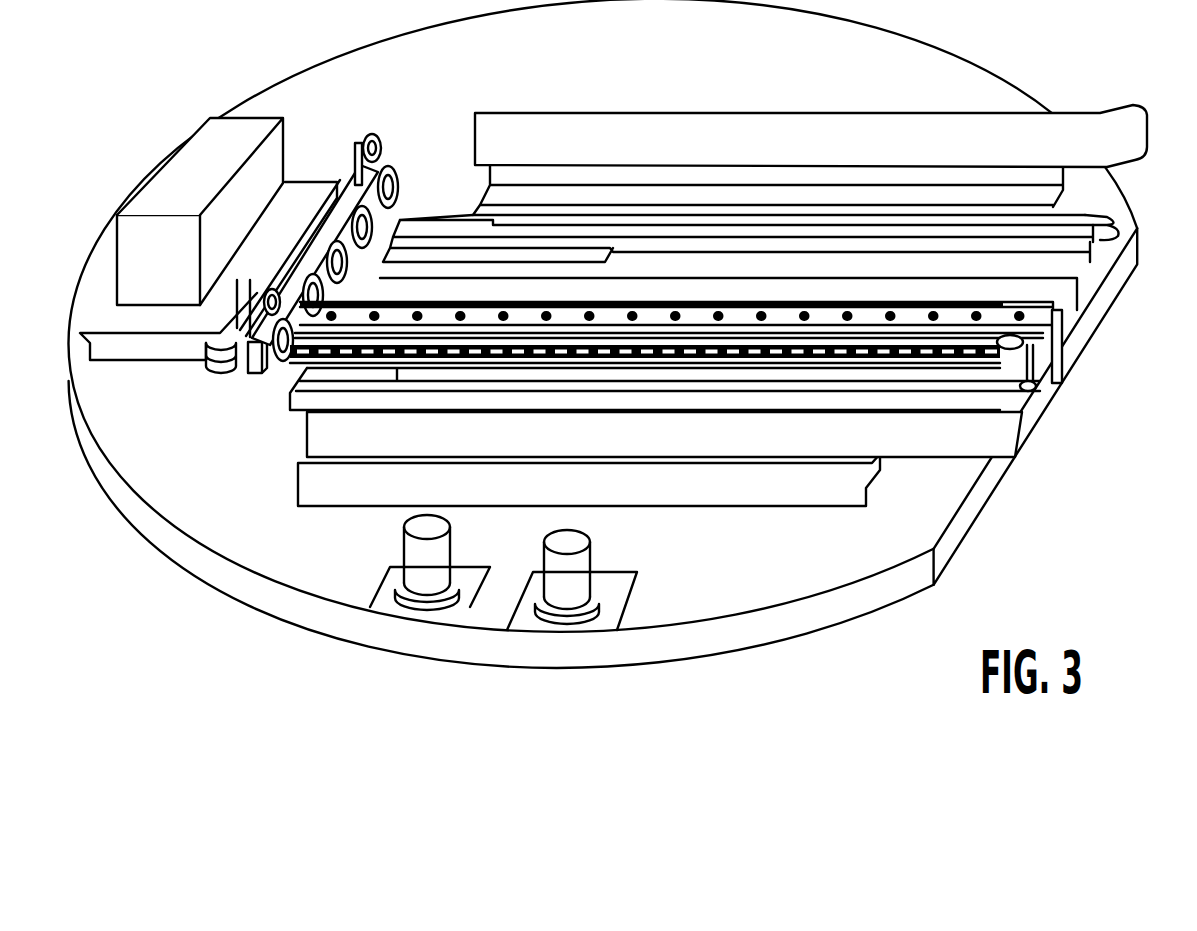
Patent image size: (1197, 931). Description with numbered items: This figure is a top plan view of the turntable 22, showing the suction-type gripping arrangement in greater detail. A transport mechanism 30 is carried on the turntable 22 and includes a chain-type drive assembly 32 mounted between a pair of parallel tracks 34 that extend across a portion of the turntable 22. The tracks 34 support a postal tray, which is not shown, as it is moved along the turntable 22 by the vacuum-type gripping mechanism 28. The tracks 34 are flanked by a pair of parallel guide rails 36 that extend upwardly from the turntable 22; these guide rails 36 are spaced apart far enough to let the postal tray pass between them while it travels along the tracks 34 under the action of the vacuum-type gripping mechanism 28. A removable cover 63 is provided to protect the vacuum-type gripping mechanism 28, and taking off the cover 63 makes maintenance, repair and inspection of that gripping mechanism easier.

The turntable 22 is at (762, 593).
The vacuum-type gripping mechanism 28 is at (320, 140).
The transport mechanism 30 is at (1038, 297).
The chain-type drive assembly 32 is at (1043, 338).
The tracks 34 is at (1070, 217).
The guide rails 36 is at (677, 138).
The removable cover 63 is at (190, 160).